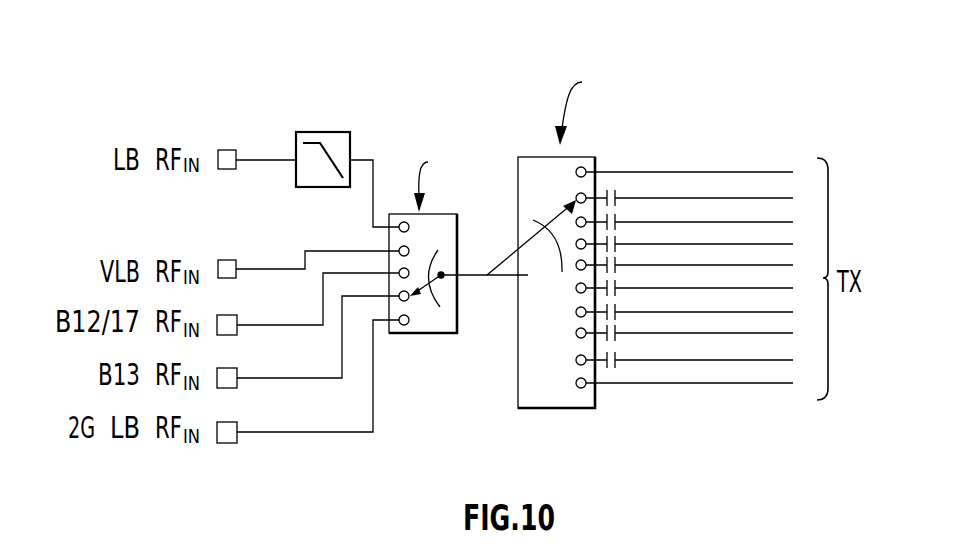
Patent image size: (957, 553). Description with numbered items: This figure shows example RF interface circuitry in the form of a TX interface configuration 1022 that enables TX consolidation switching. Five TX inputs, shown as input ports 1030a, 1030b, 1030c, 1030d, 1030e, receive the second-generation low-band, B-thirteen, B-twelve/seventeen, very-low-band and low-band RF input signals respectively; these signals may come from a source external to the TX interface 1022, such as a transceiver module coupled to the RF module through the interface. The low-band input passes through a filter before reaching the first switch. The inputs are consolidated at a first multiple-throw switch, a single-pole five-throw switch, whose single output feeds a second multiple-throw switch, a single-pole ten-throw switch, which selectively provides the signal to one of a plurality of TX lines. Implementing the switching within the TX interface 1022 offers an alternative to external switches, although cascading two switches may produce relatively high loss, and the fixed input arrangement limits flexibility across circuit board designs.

The TX interface 1022 is at (506, 48).
The 2G LB RF input port 1030a is at (226, 422).
The B13 RF input port 1030b is at (226, 368).
The B12/17 RF input port 1030c is at (226, 315).
The VLB RF input port 1030d is at (227, 260).
The LB RF input port 1030e is at (227, 150).